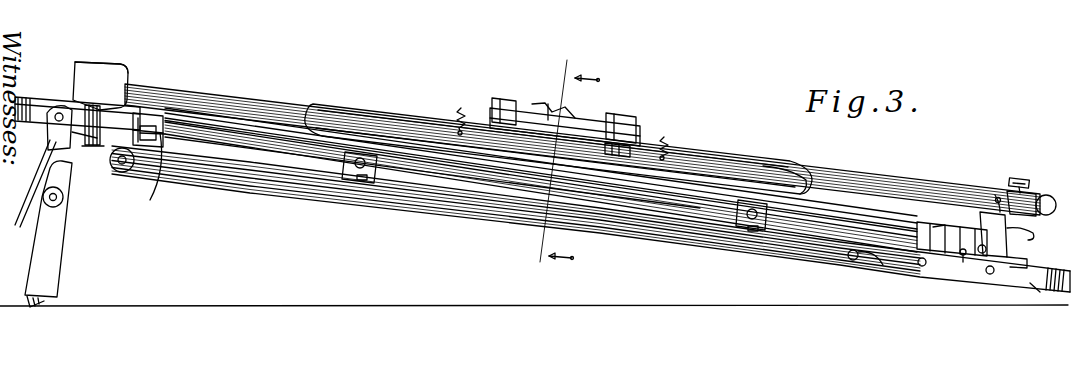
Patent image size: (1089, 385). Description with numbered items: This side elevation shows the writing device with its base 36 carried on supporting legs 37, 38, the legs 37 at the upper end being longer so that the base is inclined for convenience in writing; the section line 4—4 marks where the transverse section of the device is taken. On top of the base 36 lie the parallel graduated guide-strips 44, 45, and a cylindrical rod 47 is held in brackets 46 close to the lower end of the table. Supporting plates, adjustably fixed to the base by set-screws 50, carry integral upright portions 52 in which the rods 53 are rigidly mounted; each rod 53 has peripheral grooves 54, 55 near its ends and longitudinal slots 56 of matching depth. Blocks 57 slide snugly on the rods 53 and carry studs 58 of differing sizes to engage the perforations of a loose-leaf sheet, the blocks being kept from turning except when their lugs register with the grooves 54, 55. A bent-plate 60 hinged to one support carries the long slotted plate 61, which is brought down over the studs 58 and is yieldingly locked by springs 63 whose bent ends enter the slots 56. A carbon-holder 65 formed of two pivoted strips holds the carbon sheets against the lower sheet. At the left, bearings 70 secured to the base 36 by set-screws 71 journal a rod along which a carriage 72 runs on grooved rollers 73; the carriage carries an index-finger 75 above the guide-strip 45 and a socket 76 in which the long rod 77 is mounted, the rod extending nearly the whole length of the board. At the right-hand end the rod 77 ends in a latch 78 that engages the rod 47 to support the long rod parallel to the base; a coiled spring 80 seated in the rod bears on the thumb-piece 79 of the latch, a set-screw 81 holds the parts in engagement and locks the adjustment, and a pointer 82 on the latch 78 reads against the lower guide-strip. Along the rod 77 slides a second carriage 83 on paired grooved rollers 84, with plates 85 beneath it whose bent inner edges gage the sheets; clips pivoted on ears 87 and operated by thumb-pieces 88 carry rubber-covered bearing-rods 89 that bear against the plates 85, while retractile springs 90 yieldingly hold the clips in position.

The section line 4— 4 is at (564, 169).
The base 36 is at (213, 183).
The supporting legs 37 is at (38, 279).
The supporting legs 38 is at (1033, 290).
The graduated guide-strip 44 is at (1042, 278).
The graduated guide-strip 45 is at (98, 146).
The brackets 46 is at (982, 254).
The rod 47 is at (970, 262).
The set-screws 50 is at (148, 140).
The upright portions 52 is at (150, 150).
The rods 53 is at (503, 190).
The peripheral groove 54 is at (928, 238).
The peripheral groove 55 is at (160, 148).
The longitudinal slots 56 is at (815, 222).
The blocks 57 is at (372, 182).
The studs 58 is at (357, 169).
The bent-plate 60 is at (172, 120).
The long plate 61 is at (848, 210).
The springs 63 is at (923, 243).
The carbon-holder 65 is at (933, 227).
The bearings 70 is at (50, 135).
The set-screws 71 is at (63, 205).
The carriage 72 is at (55, 103).
The rollers 73 is at (24, 110).
The index-finger 75 is at (99, 128).
The socket 76 is at (101, 71).
The rod 77 is at (277, 95).
The latch 78 is at (998, 228).
The thumb-piece 79 is at (1018, 232).
The coiled spring 80 is at (1012, 200).
The set-screw 81 is at (1019, 178).
The pointer 82 is at (1008, 259).
The carriage 83 is at (572, 140).
The rollers 84 is at (605, 149).
The plates 85 is at (412, 141).
The ears 87 is at (518, 102).
The thumb-pieces 88 is at (565, 107).
The bearing-rods 89 is at (752, 183).
The retractile springs 90 is at (468, 100).